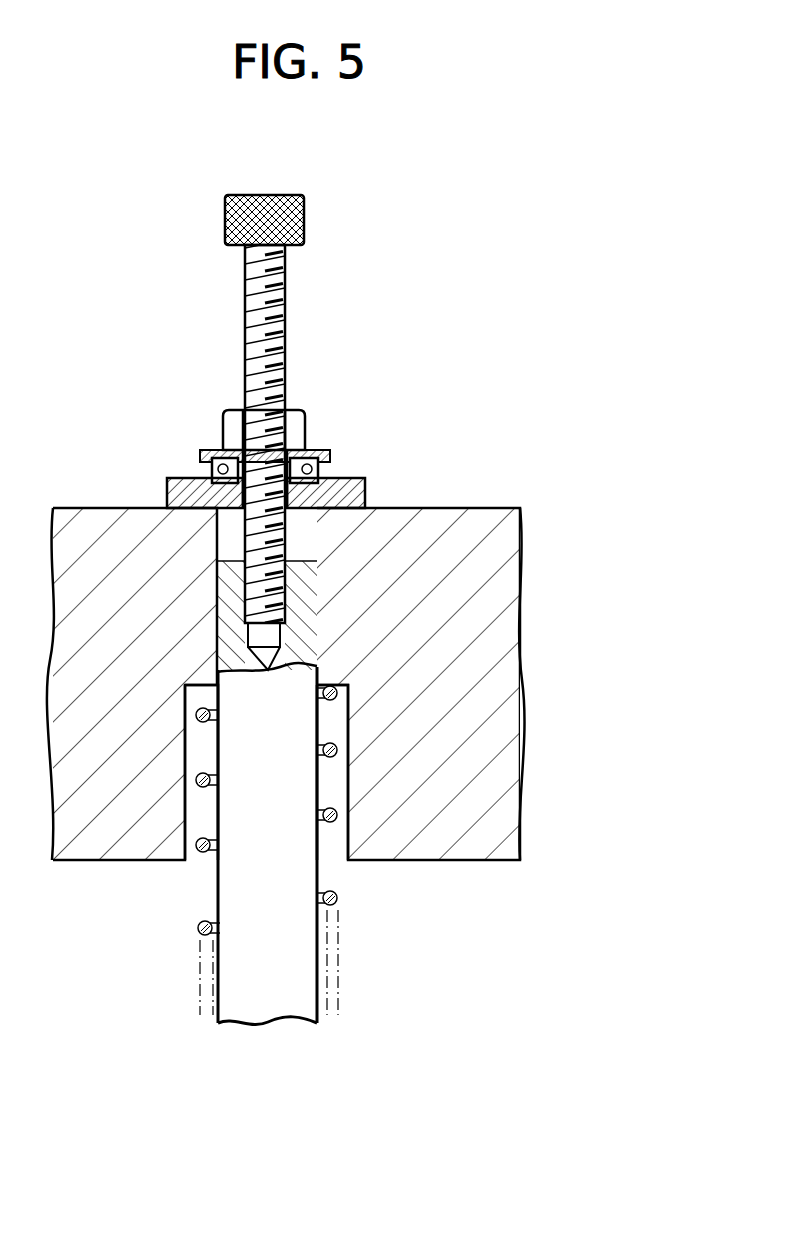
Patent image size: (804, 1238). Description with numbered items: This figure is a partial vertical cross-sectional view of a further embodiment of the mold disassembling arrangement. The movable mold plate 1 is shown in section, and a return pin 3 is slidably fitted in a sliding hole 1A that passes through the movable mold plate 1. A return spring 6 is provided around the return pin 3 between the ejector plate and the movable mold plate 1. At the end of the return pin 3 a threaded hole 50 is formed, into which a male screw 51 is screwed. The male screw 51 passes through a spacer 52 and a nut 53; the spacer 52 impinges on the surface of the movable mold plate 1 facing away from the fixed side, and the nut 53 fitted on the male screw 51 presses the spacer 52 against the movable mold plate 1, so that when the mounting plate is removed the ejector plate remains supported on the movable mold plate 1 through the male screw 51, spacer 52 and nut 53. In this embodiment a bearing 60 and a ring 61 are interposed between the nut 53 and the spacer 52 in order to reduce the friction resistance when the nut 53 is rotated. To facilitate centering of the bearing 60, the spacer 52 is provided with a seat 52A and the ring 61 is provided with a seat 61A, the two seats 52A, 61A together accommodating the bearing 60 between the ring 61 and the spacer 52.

The movable mold plate 1 is at (497, 595).
The sliding hole 1A is at (215, 502).
The return pin 3 is at (300, 990).
The return spring 6 is at (337, 893).
The threaded hole 50 is at (268, 645).
The male screw 51 is at (303, 215).
The spacer 52 is at (369, 486).
The seat 52A is at (212, 472).
The nut 53 is at (297, 410).
The bearing 60 is at (321, 472).
The ring 61 is at (323, 452).
The seat 61A is at (204, 448).